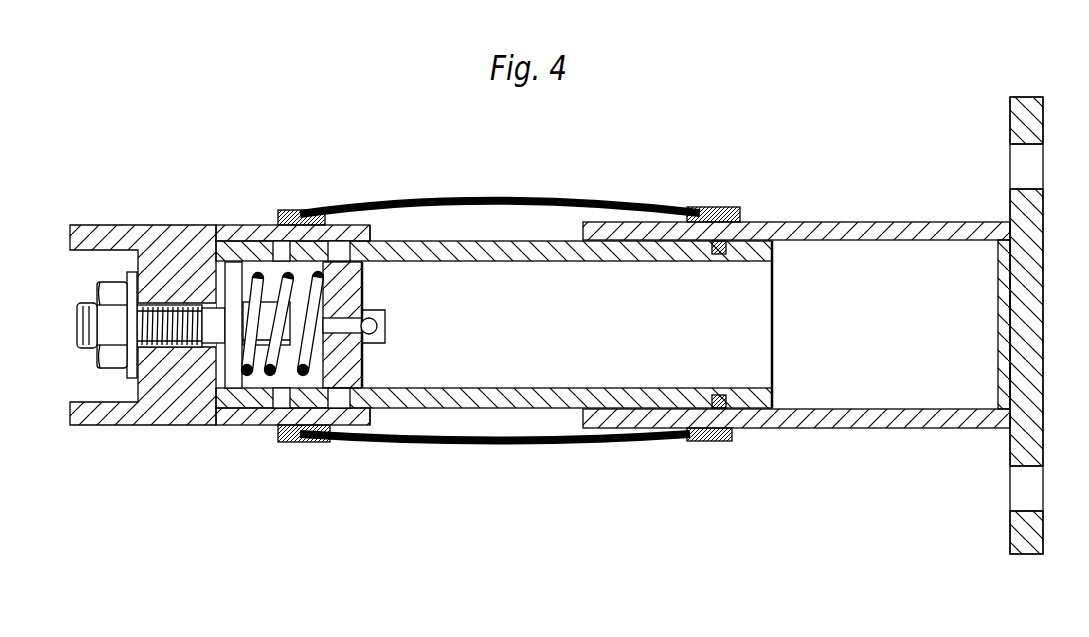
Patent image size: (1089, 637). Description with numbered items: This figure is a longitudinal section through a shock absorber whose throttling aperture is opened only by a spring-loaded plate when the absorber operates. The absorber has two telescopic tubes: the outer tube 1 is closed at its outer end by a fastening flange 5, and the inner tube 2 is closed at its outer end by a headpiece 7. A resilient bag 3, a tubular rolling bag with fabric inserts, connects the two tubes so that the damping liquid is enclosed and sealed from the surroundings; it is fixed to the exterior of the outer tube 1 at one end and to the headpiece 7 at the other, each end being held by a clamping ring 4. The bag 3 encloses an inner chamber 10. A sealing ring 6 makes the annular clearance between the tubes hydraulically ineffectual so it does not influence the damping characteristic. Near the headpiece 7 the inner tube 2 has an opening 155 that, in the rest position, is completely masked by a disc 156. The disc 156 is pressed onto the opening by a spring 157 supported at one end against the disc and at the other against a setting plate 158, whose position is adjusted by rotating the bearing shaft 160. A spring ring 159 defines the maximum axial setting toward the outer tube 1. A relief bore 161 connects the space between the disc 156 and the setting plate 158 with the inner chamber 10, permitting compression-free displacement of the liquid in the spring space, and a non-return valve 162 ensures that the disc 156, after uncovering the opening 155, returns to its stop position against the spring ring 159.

The outer tube 1 is at (857, 225).
The inner tube 2 is at (553, 248).
The resilient bag 3 is at (482, 205).
The clamping ring 4 is at (303, 212).
The fastening flange 5 is at (1030, 100).
The sealing ring 6 is at (726, 243).
The headpiece 7 is at (176, 402).
The inner chamber 10 is at (518, 235).
The opening 155 is at (340, 250).
The disc 156 is at (344, 372).
The spring 157 is at (272, 378).
The setting plate 158 is at (234, 270).
The spring ring 159 is at (372, 250).
The bearing shaft 160 is at (160, 303).
The relief bore 161 is at (281, 250).
The non-return valve 162 is at (388, 333).